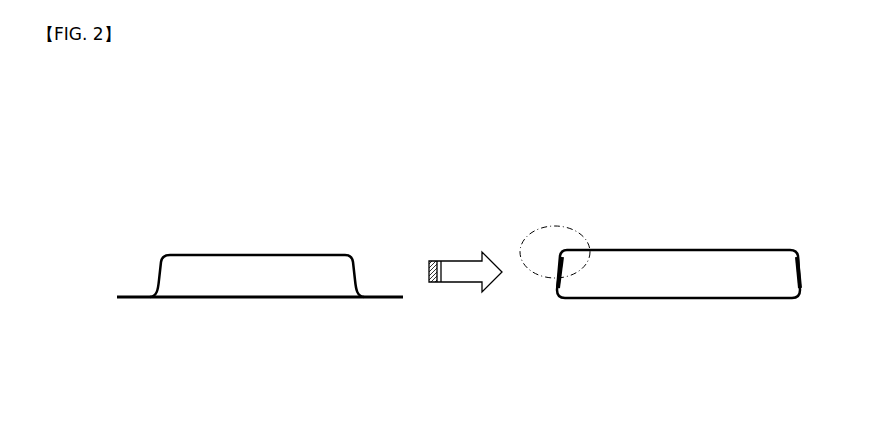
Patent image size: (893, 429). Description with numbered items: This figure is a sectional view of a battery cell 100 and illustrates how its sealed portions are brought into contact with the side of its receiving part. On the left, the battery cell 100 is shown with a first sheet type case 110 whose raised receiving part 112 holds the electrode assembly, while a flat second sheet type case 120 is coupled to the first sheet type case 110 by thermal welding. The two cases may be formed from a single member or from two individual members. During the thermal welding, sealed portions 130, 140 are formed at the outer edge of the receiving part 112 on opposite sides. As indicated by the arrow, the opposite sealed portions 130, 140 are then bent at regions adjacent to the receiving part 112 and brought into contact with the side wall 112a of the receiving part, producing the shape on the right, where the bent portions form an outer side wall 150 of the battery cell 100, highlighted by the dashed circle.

The battery cell 100 is at (90, 129).
The first sheet type case 110 is at (237, 218).
The receiving part 112 is at (303, 268).
The side wall of the receiving part 112a is at (160, 272).
The second sheet type case 120 is at (242, 345).
The sealed portion 130 is at (133, 299).
The sealed portion 140 is at (392, 299).
The outer side wall of the battery cell 150 is at (560, 262).